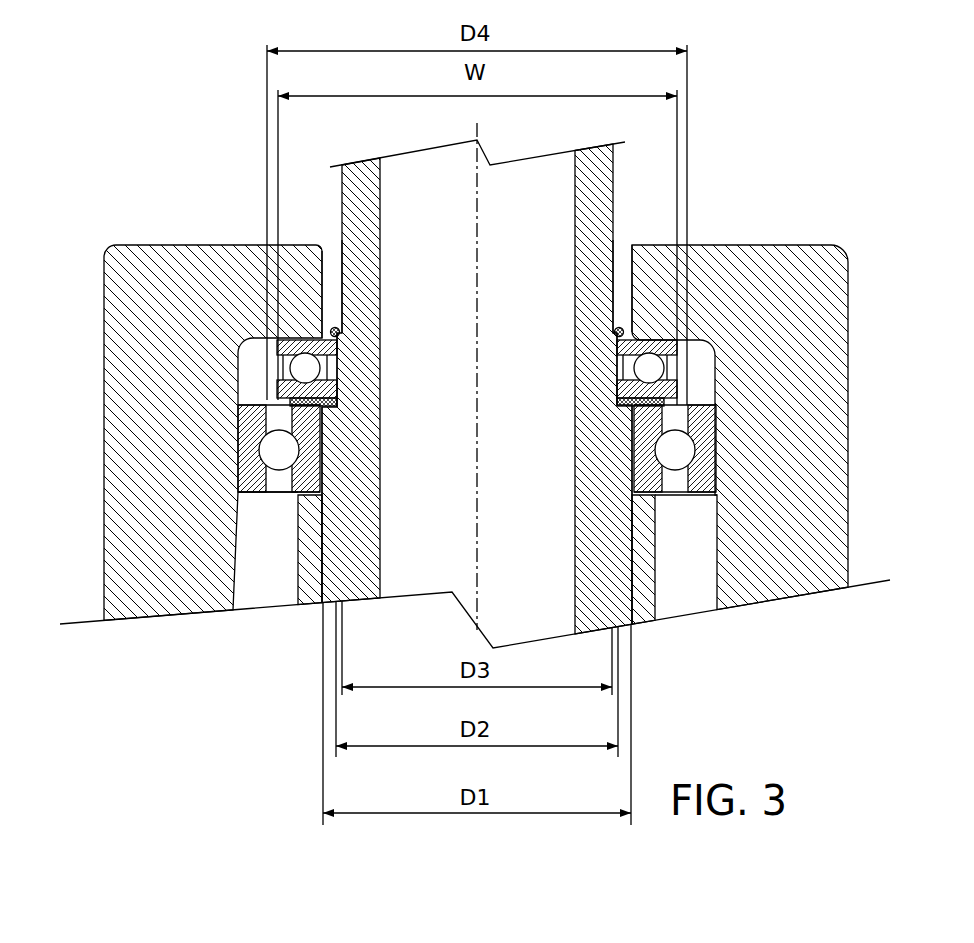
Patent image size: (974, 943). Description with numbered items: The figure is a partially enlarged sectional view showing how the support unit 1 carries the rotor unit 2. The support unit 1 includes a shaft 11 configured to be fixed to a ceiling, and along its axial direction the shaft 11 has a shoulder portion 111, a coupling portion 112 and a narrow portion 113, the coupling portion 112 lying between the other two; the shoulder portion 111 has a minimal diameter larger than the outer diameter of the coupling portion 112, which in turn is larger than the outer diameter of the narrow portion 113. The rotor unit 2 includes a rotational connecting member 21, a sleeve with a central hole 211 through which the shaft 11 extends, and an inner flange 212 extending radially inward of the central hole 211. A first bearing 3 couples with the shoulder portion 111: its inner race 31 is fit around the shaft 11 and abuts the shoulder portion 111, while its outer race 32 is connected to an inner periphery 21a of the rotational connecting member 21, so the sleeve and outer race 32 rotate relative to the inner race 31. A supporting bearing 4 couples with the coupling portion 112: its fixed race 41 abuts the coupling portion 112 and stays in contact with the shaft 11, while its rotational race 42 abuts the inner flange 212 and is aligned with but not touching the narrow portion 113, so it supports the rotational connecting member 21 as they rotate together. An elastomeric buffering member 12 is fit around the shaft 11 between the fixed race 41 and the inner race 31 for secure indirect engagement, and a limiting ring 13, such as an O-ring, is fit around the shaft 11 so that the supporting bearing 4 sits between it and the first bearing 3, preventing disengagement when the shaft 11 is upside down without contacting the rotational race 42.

The support unit 1 is at (457, 366).
The shaft 11 is at (603, 175).
The shoulder portion 111 is at (300, 495).
The coupling portion 112 is at (277, 403).
The narrow portion 113 is at (340, 343).
The buffering member 12 is at (277, 393).
The limiting ring 13 is at (332, 328).
The rotor unit 2 is at (504, 431).
The rotational connecting member 21 is at (777, 570).
The central hole 211 is at (330, 271).
The inner flange 212 is at (666, 273).
The inner periphery 21a is at (718, 586).
The first bearing 3 is at (595, 461).
The inner race 31 is at (657, 493).
The outer race 32 is at (700, 450).
The supporting bearing 4 is at (614, 338).
The fixed race 41 is at (677, 393).
The rotational race 42 is at (677, 352).